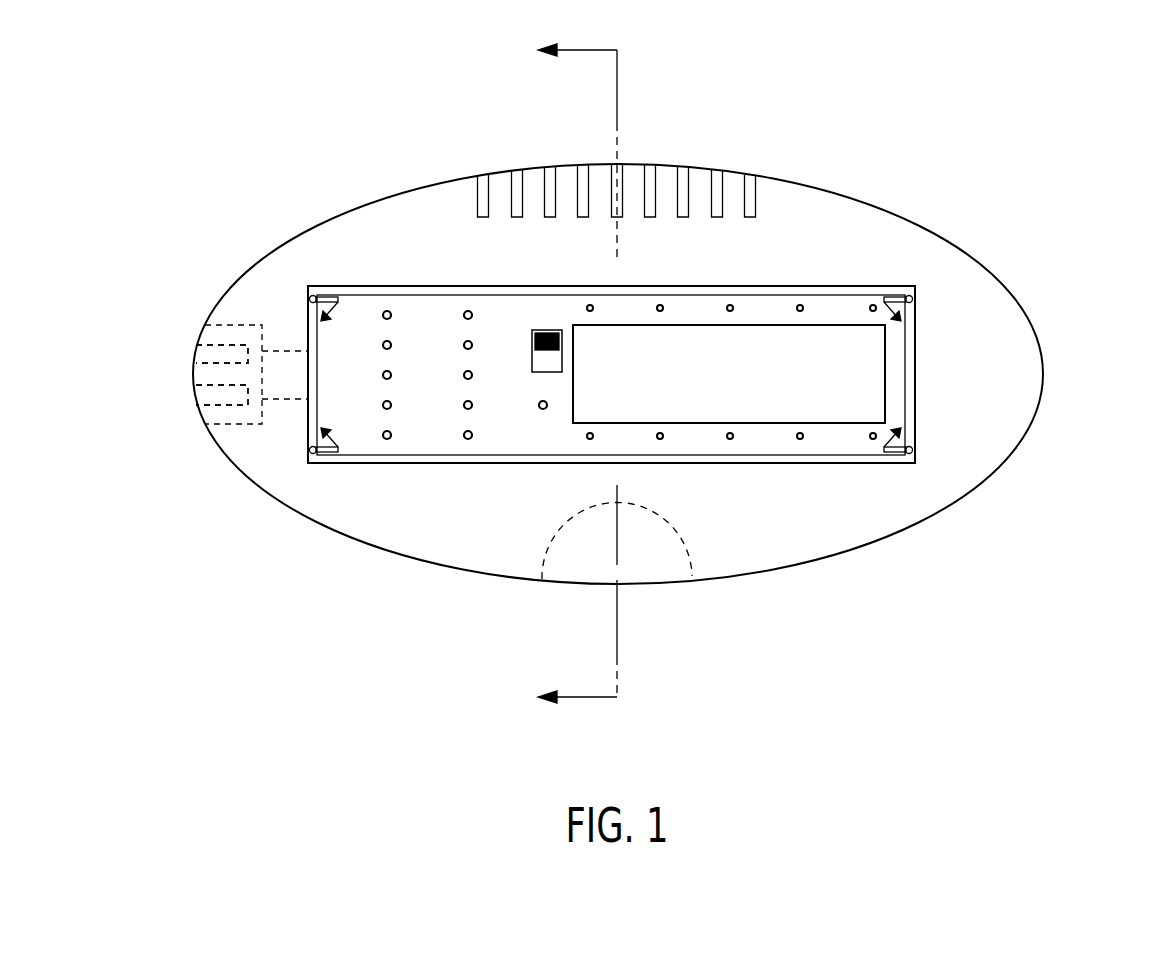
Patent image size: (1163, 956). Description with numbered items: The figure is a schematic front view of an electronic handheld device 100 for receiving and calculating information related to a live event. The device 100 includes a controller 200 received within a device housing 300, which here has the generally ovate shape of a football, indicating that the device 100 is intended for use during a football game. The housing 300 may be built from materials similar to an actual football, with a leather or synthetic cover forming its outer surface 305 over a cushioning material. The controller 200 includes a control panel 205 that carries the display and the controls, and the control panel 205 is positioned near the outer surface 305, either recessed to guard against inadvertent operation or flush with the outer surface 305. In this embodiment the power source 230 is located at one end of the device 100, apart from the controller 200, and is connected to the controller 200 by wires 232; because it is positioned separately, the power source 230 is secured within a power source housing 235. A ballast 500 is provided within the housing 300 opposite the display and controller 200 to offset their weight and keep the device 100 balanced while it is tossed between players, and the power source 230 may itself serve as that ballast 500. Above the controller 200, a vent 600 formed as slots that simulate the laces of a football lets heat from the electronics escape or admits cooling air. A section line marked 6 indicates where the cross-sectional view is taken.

The electronic handheld device 100 is at (1002, 135).
The controller 200 is at (627, 301).
The control panel 205 is at (887, 290).
The power source 230 is at (190, 390).
The wires 232 is at (285, 350).
The power source housing 235 is at (237, 427).
The device housing 300 is at (993, 367).
The outer surface 305 is at (873, 230).
The ballast 500 is at (618, 552).
The vent 600 is at (517, 167).
The section line 6- 6 is at (567, 374).